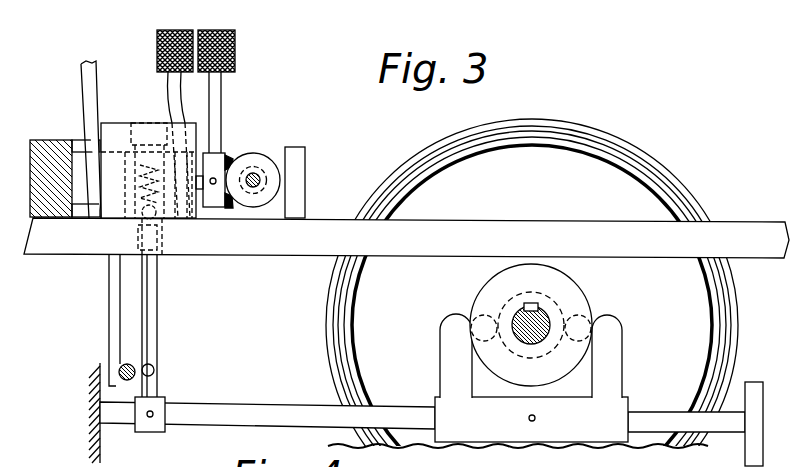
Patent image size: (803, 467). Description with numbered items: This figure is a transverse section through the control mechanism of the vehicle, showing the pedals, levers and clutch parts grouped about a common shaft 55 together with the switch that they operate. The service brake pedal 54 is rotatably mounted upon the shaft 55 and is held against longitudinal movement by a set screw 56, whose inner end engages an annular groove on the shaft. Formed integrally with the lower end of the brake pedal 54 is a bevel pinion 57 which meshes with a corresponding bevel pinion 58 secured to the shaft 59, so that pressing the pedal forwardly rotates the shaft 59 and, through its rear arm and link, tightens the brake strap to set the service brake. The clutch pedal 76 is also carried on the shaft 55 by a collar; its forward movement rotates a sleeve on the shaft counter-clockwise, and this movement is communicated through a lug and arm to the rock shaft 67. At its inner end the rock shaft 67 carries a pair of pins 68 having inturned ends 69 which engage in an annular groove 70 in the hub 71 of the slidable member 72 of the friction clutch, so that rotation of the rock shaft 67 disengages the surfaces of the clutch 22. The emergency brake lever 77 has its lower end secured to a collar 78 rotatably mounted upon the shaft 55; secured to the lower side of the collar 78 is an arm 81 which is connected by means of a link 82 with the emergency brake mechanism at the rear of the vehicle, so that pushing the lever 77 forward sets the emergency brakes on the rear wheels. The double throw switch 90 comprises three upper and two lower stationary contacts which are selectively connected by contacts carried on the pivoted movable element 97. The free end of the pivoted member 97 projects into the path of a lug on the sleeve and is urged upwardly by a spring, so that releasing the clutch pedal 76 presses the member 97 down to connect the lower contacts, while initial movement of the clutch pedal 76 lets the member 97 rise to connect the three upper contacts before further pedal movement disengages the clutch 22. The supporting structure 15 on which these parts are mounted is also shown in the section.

The clamp block 15 is at (53, 216).
The clutch 22 is at (665, 208).
The service brake pedal 54 is at (236, 58).
The shaft 55 is at (201, 182).
The set screw 56 is at (213, 185).
The bevel pinion 57 is at (231, 200).
The bevel pinion 58 is at (265, 197).
The shaft 59 is at (258, 177).
The rock shaft 67 is at (230, 405).
The pins 68 is at (445, 378).
The inturned ends 69 is at (470, 316).
The annular groove 70 is at (570, 297).
The hub 71 is at (555, 375).
The slidable member 72 is at (352, 358).
The clutch pedal 76 is at (158, 47).
The emergency brake lever 77 is at (90, 104).
The collar 78 is at (104, 194).
The arm 81 is at (110, 298).
The link 82 is at (142, 365).
The double throw switch 90 is at (113, 138).
The movable element 97 is at (170, 209).